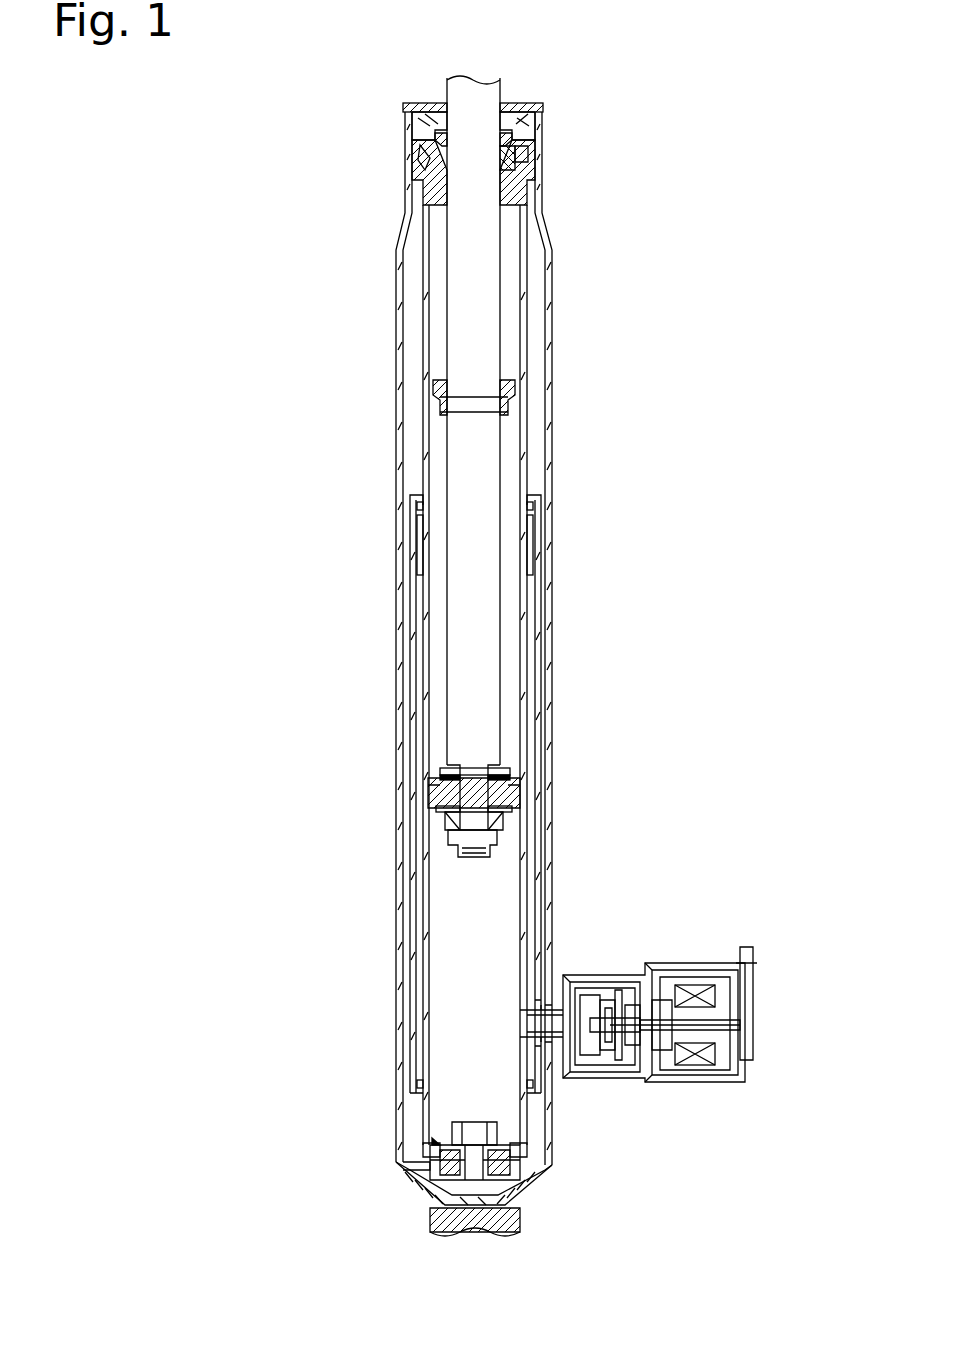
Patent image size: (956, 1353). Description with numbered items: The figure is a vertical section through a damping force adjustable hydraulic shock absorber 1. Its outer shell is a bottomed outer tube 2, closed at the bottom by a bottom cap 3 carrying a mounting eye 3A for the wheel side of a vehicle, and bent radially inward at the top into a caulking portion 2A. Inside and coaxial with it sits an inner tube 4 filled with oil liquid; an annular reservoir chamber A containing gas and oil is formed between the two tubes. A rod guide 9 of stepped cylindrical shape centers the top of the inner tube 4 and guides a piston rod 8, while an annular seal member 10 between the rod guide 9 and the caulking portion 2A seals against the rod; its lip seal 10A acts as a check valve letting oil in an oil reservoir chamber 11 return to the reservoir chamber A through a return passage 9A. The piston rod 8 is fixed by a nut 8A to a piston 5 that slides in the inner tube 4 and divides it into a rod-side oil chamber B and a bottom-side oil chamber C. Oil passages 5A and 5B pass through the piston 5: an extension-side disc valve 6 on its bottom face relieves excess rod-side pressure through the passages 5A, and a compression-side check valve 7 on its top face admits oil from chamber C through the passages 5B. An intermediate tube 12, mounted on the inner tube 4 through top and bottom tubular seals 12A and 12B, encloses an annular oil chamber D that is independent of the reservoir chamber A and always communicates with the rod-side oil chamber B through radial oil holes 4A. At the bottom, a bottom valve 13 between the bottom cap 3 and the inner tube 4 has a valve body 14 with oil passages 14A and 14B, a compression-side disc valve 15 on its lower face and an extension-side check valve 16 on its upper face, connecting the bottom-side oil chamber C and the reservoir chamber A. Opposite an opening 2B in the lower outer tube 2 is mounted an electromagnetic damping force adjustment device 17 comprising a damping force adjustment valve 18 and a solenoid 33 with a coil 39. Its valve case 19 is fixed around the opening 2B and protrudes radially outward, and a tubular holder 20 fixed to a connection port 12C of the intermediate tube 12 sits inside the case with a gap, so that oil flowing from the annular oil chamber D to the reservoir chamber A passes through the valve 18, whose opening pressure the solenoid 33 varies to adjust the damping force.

The damping force adjustable hydraulic shock absorber 1 is at (380, 365).
The outer tube 2 is at (548, 298).
The caulking portion 2A is at (520, 110).
The opening 2B is at (553, 1000).
The bottom cap 3 is at (535, 1193).
The mounting eye 3A is at (433, 1220).
The inner tube 4 is at (524, 354).
The oil holes 4A is at (420, 540).
The piston 5 is at (520, 793).
The oil passages 5A is at (513, 773).
The oil passages 5B is at (440, 802).
The disc valve 6 is at (495, 812).
The compression-side check valve 7 is at (440, 774).
The piston rod 8 is at (465, 606).
The nut 8A is at (458, 843).
The rod guide 9 is at (518, 180).
The return passage 9A is at (420, 153).
The seal member 10 is at (433, 118).
The lip seal 10A is at (522, 134).
The oil reservoir chamber 11 is at (530, 160).
The intermediate tube 12 is at (412, 690).
The tubular seal 12A is at (418, 502).
The tubular seal 12B is at (415, 1085).
The connection port 12C is at (533, 1017).
The bottom valve 13 is at (432, 1140).
The valve body 14 is at (522, 1178).
The oil passage 14A is at (433, 1150).
The oil passage 14B is at (512, 1158).
The compression-side disc valve 15 is at (433, 1172).
The extension-side check valve 16 is at (500, 1135).
The electromagnetic damping force adjustment device 17 is at (768, 946).
The damping force adjustment valve 18 is at (627, 968).
The valve case 19 is at (618, 1080).
The tubular holder 20 is at (548, 1038).
The solenoid 33 is at (699, 968).
The coil 39 is at (700, 1083).
The reservoir chamber A is at (536, 420).
The rod-side oil chamber B is at (505, 612).
The bottom-side oil chamber C is at (458, 918).
The annular oil chamber D is at (530, 857).